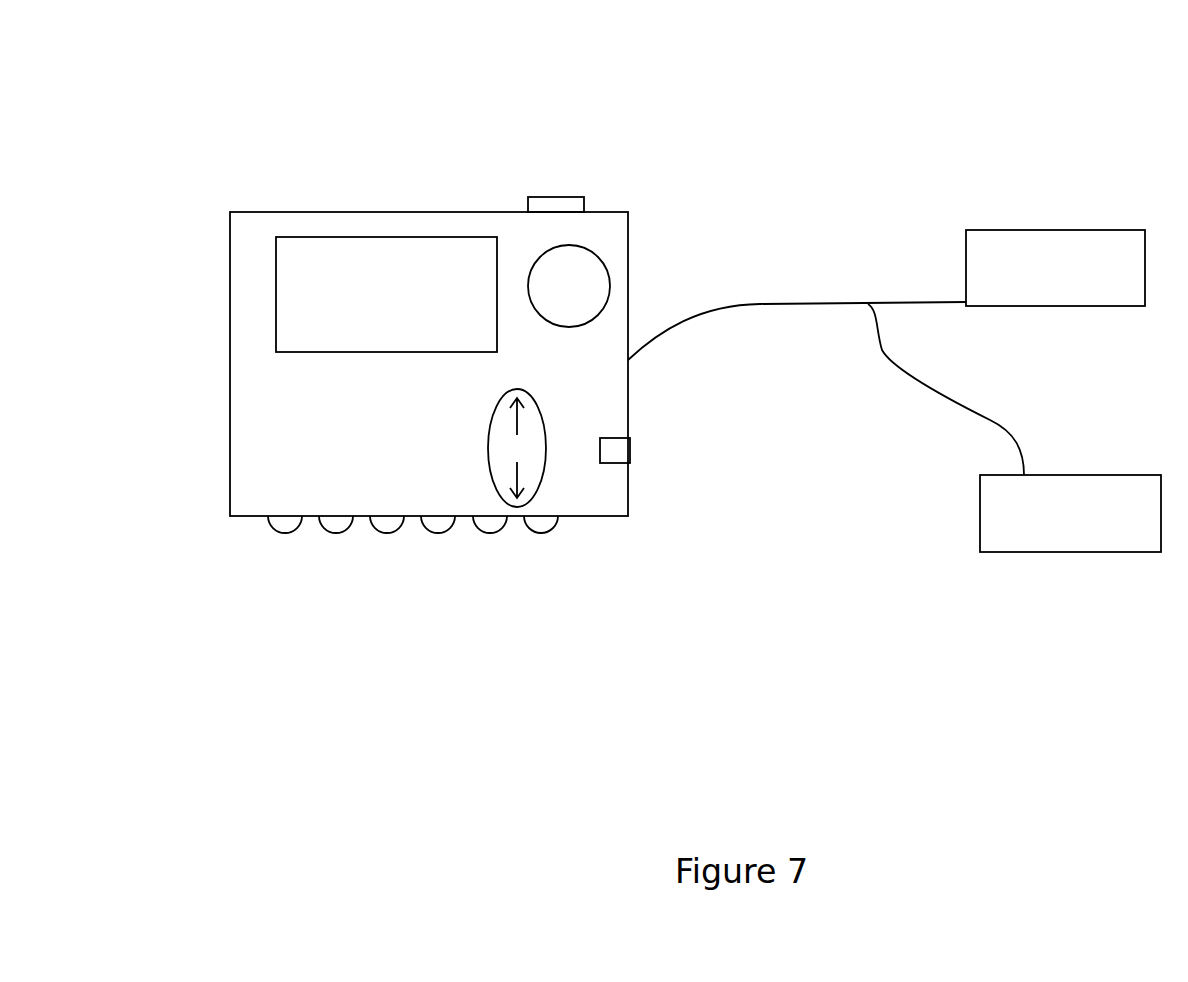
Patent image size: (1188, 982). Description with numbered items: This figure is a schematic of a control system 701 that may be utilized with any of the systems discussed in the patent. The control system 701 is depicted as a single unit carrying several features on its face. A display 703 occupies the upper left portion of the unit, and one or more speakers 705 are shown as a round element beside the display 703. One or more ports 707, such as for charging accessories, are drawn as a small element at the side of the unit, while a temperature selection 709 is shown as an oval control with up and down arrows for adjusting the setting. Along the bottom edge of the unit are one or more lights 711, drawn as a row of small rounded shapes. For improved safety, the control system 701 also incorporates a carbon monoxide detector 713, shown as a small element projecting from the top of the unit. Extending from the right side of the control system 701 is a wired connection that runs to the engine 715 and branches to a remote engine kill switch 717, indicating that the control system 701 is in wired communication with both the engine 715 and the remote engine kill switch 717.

The control system 701 is at (250, 98).
The display 703 is at (276, 311).
The speakers 705 is at (611, 283).
The ports 707 is at (630, 450).
The temperature selection 709 is at (490, 460).
The lights 711 is at (285, 532).
The carbon monoxide detector 713 is at (552, 197).
The engine 715 is at (1066, 230).
The remote engine kill switch 717 is at (1071, 552).